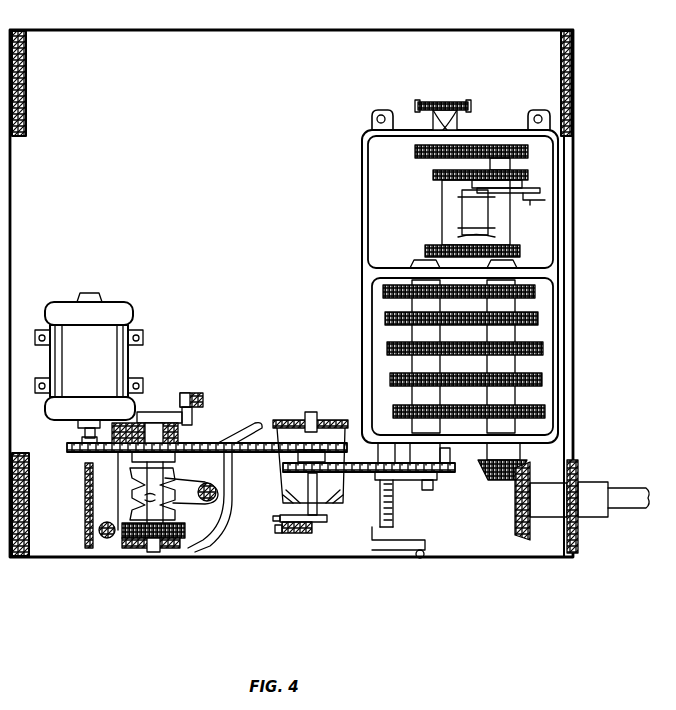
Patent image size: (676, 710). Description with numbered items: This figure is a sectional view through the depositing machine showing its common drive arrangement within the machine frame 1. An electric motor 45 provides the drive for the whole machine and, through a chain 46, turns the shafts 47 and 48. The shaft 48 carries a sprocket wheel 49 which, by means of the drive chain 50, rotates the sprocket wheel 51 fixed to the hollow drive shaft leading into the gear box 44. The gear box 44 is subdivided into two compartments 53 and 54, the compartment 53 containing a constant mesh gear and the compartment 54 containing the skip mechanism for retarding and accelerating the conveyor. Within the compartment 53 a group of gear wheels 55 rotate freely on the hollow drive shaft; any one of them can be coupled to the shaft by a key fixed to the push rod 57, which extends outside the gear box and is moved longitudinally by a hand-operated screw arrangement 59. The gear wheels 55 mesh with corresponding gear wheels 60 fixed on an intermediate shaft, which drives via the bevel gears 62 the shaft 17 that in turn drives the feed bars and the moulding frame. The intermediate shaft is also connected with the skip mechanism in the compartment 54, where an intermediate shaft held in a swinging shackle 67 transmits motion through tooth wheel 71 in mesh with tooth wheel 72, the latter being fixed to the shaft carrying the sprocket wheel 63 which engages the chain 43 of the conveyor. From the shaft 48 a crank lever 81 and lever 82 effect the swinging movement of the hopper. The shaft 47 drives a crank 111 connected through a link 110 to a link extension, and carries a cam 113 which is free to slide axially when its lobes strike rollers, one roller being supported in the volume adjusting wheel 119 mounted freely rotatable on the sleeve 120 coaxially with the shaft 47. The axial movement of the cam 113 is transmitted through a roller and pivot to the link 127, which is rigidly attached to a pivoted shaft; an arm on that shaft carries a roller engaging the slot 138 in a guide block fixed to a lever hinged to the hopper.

The machine frame 1 is at (566, 58).
The shaft 17 is at (632, 490).
The chain 43 is at (468, 105).
The gear box 44 is at (558, 285).
The electric motor 45 is at (128, 358).
The chain 46 is at (253, 452).
The shaft 47 is at (152, 552).
The shaft 48 is at (308, 412).
The sprocket wheel 49 is at (278, 468).
The drive chain 50 is at (355, 474).
The sprocket wheel 51 is at (448, 473).
The compartment 53 is at (380, 395).
The compartment 54 is at (388, 233).
The gear wheels 55 is at (392, 347).
The push rod 57 is at (428, 490).
The hand-operated screw arrangement 59 is at (393, 492).
The gear wheels 60 is at (542, 348).
The bevel gears 62 is at (510, 485).
The sprocket wheel 63 is at (445, 102).
The swinging shackle 67 is at (443, 207).
The tooth wheel 71 is at (528, 152).
The tooth wheel 72 is at (415, 152).
The crank lever 81 is at (327, 518).
The lever 82 is at (308, 533).
The link 110 is at (196, 393).
The crank 111 is at (152, 412).
The cam 113 is at (178, 483).
The volume adjusting wheel 119 is at (120, 542).
The sleeve 120 is at (108, 520).
The link 127 is at (205, 483).
The slot 138 is at (218, 498).